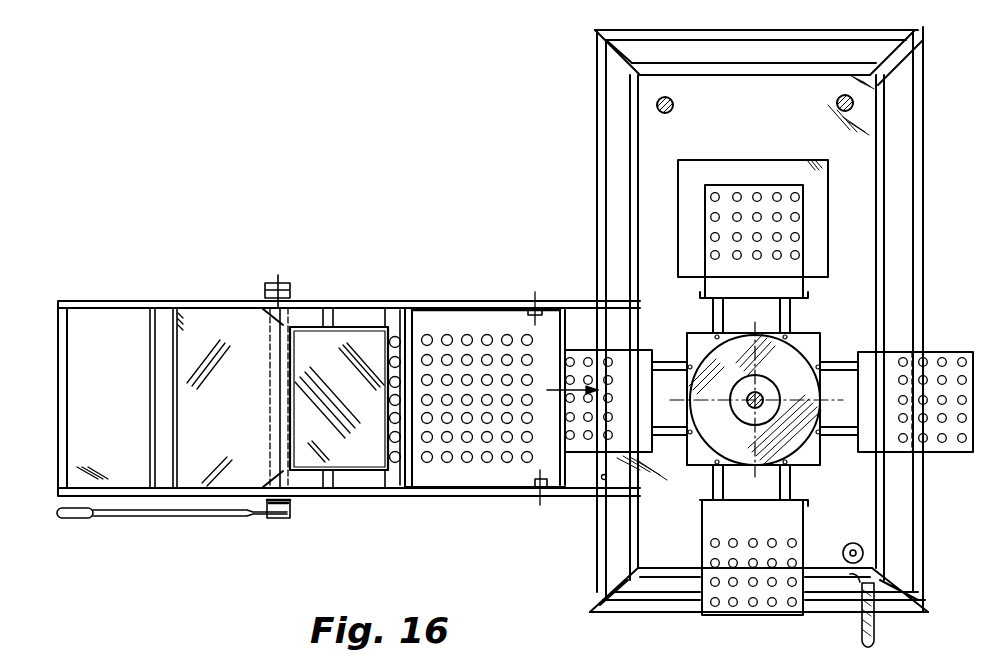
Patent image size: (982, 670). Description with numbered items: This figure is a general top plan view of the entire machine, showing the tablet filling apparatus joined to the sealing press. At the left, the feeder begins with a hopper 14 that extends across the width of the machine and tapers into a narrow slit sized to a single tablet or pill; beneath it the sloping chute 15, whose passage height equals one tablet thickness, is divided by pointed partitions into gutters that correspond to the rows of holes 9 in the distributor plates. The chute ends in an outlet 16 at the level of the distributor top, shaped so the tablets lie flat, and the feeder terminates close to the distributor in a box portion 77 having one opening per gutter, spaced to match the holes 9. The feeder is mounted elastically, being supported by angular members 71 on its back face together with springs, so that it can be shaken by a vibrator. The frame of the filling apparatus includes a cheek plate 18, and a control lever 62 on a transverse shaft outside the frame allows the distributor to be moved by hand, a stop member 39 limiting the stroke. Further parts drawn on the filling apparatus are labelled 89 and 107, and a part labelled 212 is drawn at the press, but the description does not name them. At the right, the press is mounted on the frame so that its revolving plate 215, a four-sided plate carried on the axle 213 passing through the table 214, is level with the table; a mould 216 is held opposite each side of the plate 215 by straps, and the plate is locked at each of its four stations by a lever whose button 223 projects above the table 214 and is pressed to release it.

The holes 9 is at (520, 476).
The hopper 14 is at (165, 309).
The sloping chute 15 is at (347, 345).
The outlet 16 is at (798, 237).
The cheek plate 18 is at (450, 307).
The stop member 39 is at (603, 479).
The control lever 62 is at (207, 518).
The angular members 71 is at (333, 484).
The box portion 77 is at (392, 488).
The bracket 89 is at (242, 480).
The gasket 107 is at (180, 309).
The lever 212 is at (860, 640).
The axle 213 is at (765, 392).
The table 214 is at (862, 518).
The revolving plate 215 is at (810, 462).
The mould 216 is at (588, 360).
The button 223 is at (851, 544).